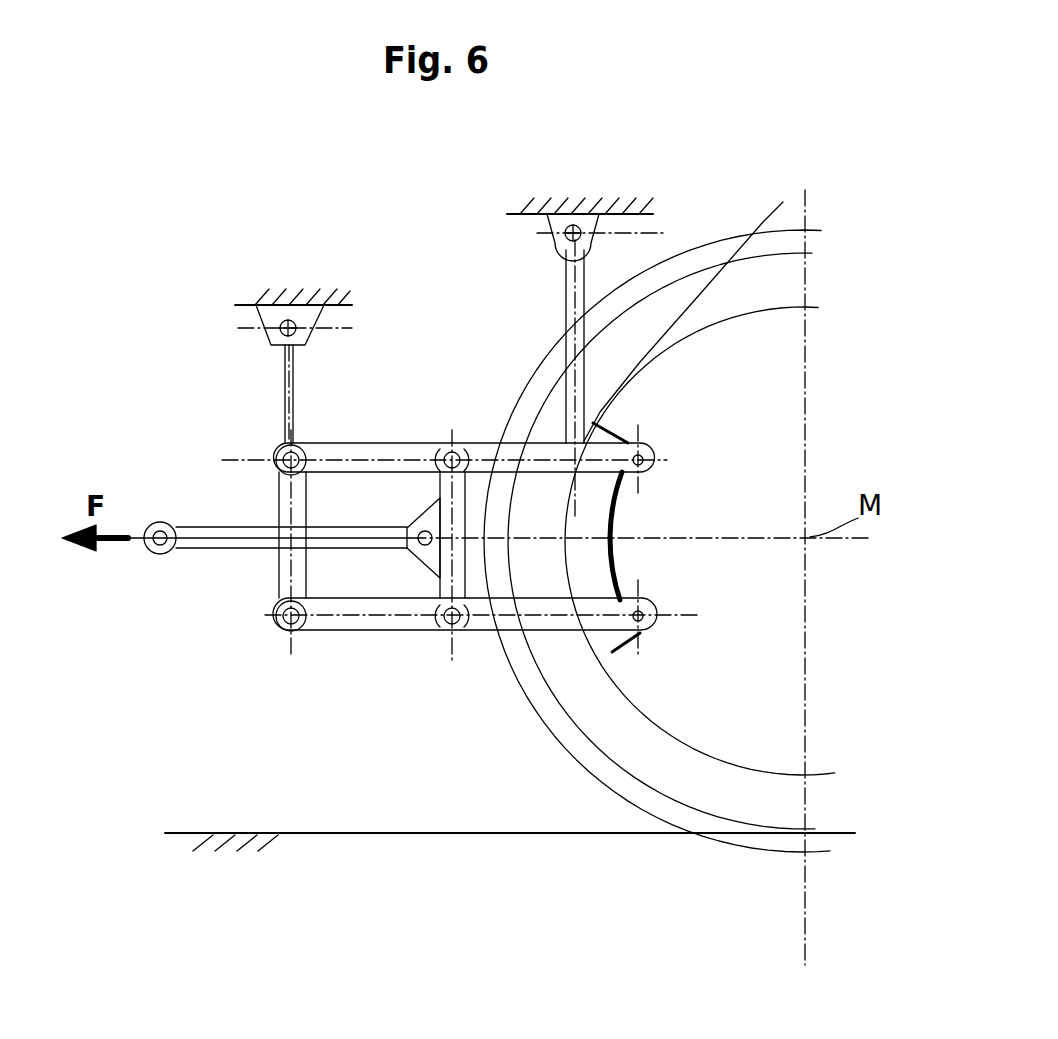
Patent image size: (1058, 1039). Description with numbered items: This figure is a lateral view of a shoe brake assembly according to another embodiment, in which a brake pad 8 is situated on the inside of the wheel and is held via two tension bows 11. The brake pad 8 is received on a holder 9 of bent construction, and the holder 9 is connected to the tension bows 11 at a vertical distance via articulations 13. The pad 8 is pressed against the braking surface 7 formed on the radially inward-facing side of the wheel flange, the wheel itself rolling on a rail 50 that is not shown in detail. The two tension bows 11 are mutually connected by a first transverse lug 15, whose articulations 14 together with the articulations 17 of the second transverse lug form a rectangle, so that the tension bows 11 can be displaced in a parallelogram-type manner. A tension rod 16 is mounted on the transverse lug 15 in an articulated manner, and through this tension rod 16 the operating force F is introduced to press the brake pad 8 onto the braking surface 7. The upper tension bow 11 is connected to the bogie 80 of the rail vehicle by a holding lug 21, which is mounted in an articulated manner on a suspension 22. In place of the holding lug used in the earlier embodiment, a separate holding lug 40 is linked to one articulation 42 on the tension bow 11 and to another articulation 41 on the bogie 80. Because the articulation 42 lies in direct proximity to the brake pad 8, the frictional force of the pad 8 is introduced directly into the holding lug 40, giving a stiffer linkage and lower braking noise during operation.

The braking surface 7 is at (787, 308).
The brake pad 8 is at (592, 503).
The holder 9 is at (617, 534).
The tension bow 11 is at (494, 633).
The articulation 13 is at (656, 612).
The articulation 14 is at (450, 443).
The first transverse lug 15 is at (447, 492).
The tension rod 16 is at (228, 546).
The articulation 17 is at (284, 446).
The holding lug 21 is at (288, 378).
The suspension 22 is at (272, 316).
The holding lug 40 is at (566, 325).
The articulation 41 is at (656, 233).
The articulation 42 is at (700, 301).
The rail 50 is at (383, 835).
The bogie 80 is at (582, 175).